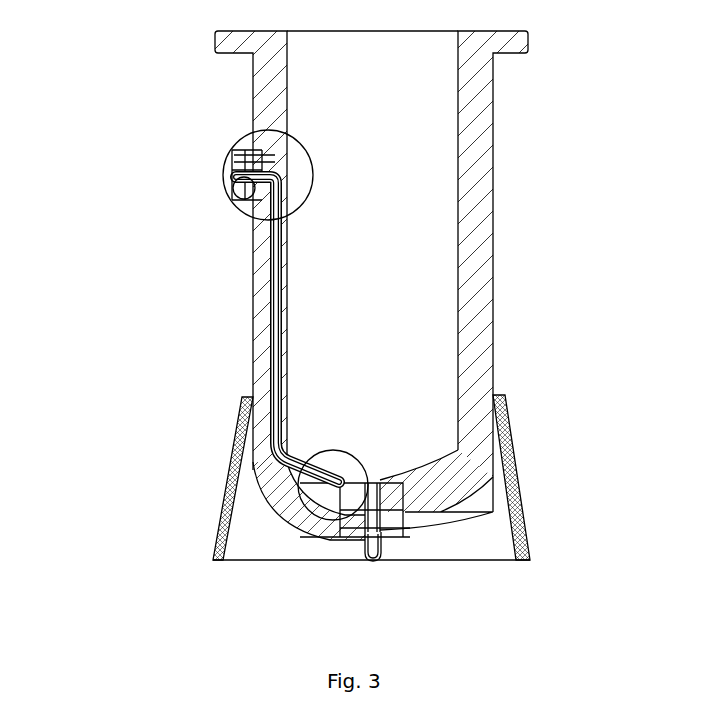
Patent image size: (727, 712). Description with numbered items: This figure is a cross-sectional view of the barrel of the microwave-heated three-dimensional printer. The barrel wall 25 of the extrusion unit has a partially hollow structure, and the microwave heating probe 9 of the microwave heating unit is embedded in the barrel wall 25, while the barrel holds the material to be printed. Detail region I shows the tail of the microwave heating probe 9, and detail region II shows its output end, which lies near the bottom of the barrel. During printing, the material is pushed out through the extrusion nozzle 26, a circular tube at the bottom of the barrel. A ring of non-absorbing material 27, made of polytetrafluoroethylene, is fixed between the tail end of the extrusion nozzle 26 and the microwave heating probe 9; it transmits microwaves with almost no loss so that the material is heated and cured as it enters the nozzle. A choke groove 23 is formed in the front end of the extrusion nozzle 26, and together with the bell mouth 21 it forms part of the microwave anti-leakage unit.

The tail of microwave heating probe I is at (224, 172).
The output end of microwave heating probe II is at (338, 450).
The microwave heating probe 9 is at (264, 272).
The bell mouth 21 is at (227, 505).
The choke groove 23 is at (398, 523).
The barrel wall 25 is at (487, 282).
The extrusion nozzle 26 is at (378, 562).
The non-absorbing material 27 is at (405, 490).